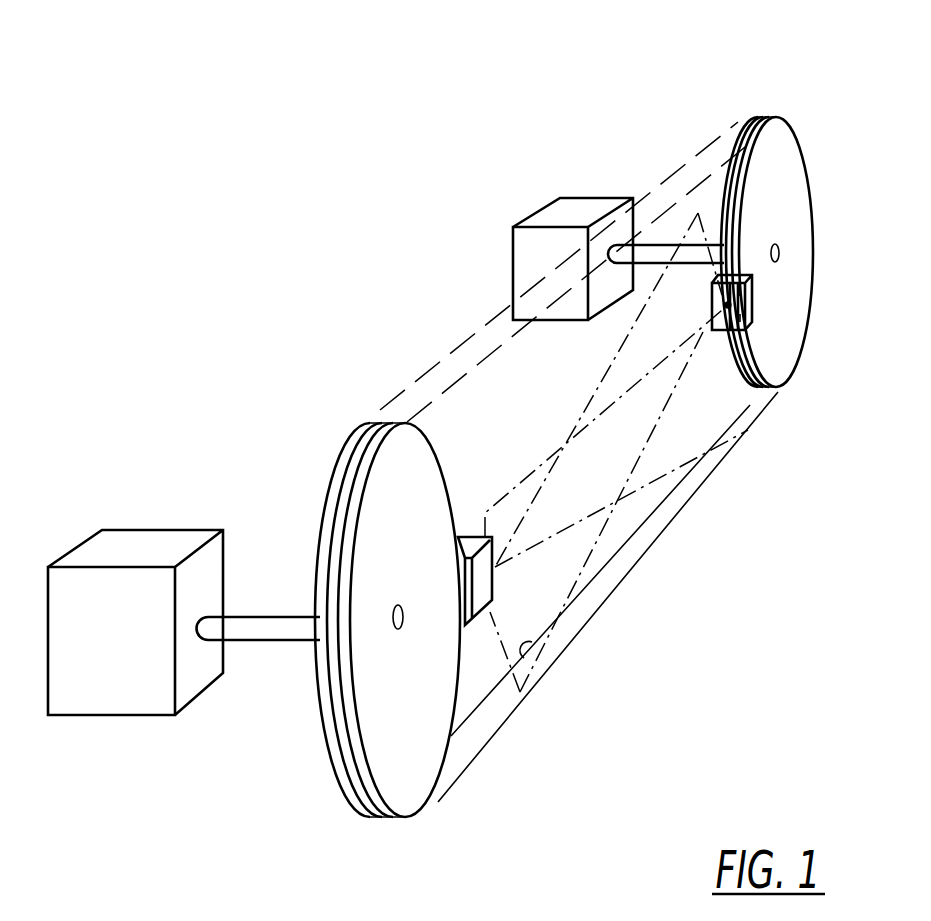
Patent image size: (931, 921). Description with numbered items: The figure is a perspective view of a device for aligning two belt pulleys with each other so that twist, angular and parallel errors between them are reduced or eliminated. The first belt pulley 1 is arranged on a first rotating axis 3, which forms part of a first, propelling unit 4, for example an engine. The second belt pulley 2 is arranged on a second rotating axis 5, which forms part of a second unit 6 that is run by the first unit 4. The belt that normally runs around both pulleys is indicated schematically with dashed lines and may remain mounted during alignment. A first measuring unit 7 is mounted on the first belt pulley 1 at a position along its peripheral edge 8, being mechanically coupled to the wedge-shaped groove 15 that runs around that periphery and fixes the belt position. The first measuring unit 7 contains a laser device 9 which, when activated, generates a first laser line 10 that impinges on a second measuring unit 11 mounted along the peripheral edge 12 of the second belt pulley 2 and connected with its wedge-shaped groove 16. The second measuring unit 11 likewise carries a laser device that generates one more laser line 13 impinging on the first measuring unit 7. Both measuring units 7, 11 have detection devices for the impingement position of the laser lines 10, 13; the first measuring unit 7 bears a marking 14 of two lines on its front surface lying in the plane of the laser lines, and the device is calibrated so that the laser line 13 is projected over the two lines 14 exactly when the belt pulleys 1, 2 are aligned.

The first belt pulley 1 is at (780, 367).
The second belt pulley 2 is at (432, 773).
The first rotating axis 3 is at (650, 253).
The first propelling unit 4 is at (560, 207).
The second rotating axis 5 is at (255, 625).
The second unit 6 is at (147, 540).
The first measuring unit 7 is at (722, 296).
The peripheral edge 8 is at (767, 118).
The laser device 9 is at (736, 306).
The first laser line 10 is at (587, 637).
The second measuring unit 11 is at (478, 582).
The peripheral edge 12 is at (387, 427).
The laser line 13 is at (745, 432).
The marking 14 is at (740, 316).
The wedge-shaped groove 15 is at (738, 150).
The wedge-shaped groove 16 is at (360, 450).